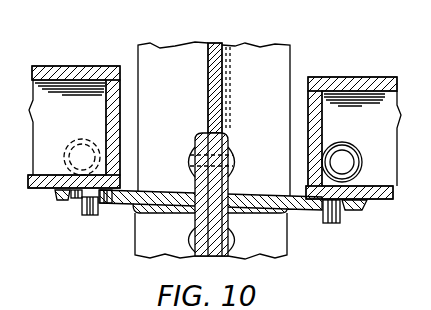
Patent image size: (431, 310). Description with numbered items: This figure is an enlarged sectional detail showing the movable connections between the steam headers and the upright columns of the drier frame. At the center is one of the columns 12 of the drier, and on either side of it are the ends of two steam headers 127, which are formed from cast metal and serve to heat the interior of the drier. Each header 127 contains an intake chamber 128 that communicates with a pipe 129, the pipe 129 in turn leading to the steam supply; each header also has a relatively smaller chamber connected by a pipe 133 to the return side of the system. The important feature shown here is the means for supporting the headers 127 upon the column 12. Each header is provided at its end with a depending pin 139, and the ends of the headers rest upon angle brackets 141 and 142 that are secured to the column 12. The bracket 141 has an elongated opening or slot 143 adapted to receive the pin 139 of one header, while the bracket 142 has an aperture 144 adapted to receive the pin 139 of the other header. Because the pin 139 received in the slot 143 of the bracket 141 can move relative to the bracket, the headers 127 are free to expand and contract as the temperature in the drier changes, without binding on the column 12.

The column 12 is at (183, 45).
The steam header 127 is at (52, 66).
The intake chamber 128 is at (95, 88).
The pipe 129 is at (352, 152).
The pipe 133 is at (79, 141).
The depending pin 139 is at (90, 215).
The angle bracket 141 is at (144, 192).
The angle bracket 142 is at (256, 192).
The elongated opening or slot 143 is at (77, 192).
The aperture 144 is at (355, 208).